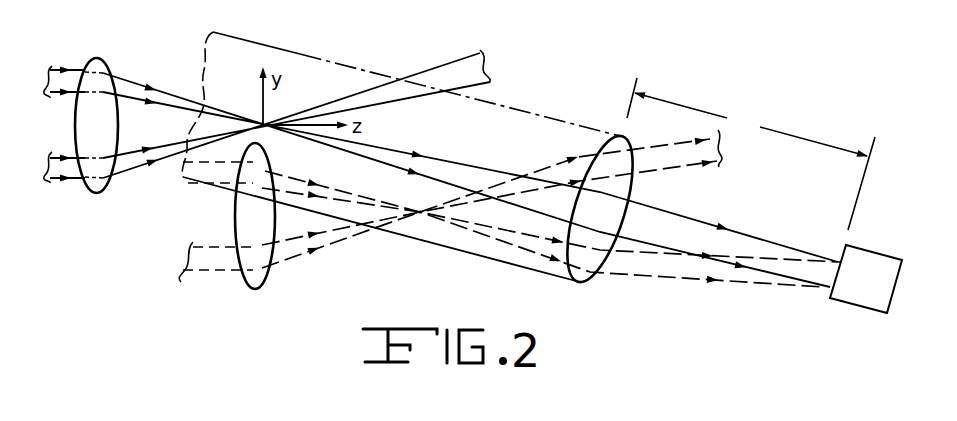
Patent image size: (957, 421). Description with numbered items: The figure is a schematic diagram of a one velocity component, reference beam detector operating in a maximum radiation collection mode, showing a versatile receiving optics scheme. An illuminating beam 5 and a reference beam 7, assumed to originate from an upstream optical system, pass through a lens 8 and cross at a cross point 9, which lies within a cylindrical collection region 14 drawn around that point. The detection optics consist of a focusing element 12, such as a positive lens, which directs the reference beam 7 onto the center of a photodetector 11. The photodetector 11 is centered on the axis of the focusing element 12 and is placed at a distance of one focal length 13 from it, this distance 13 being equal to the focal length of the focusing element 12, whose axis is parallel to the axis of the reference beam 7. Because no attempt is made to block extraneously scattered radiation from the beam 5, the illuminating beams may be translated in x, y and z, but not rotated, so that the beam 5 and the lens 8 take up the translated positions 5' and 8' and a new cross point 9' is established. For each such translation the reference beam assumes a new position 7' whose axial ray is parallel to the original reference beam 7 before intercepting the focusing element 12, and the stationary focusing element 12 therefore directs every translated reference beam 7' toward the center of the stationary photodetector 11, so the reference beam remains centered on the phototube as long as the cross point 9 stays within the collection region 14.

The illuminating beam 5 is at (267, 114).
The reference beam 7 is at (455, 152).
The lens 8 is at (114, 111).
The cross point 9 is at (288, 98).
The cylindrical collection region 14 is at (363, 70).
The translated illuminating beam 5' is at (216, 236).
The translated reference beam 7' is at (516, 218).
The translated lens 8' is at (266, 227).
The new cross point 9' is at (425, 246).
The focusing element 12 is at (583, 285).
The focal length 13 is at (751, 154).
The photodetector 11 is at (865, 246).